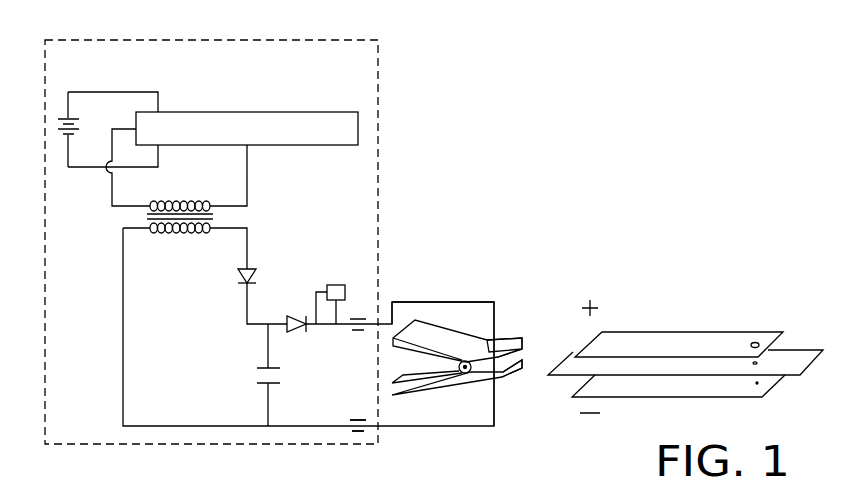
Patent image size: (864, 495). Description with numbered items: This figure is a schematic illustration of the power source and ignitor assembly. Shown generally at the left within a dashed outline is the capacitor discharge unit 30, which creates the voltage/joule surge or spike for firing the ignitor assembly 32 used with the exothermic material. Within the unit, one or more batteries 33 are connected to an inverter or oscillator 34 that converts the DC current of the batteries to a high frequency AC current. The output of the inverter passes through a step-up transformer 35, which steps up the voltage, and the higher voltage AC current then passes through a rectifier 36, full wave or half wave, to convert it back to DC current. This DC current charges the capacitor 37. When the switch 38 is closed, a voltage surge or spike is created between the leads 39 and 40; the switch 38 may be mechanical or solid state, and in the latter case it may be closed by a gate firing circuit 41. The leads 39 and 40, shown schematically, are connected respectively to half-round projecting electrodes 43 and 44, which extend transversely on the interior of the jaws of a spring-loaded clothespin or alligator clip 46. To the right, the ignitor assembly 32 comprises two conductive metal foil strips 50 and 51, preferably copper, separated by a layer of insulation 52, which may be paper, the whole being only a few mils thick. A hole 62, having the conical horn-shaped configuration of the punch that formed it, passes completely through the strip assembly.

The capacitor discharge unit 30 is at (391, 172).
The ignitor assembly 32 is at (700, 319).
The batteries 33 is at (68, 140).
The inverter or oscillator 34 is at (320, 112).
The step-up transformer 35 is at (180, 233).
The rectifier 36 is at (258, 273).
The capacitor 37 is at (263, 372).
The switch 38 is at (291, 331).
The lead 39 is at (409, 302).
The lead 40 is at (403, 427).
The gate firing circuit 41 is at (336, 285).
The projecting electrode 43 is at (494, 366).
The projecting electrode 44 is at (494, 378).
The alligator clip 46 is at (459, 319).
The conductive metal foil strip 50 is at (663, 334).
The conductive metal foil strip 51 is at (712, 393).
The layer of insulation 52 is at (797, 353).
The hole 62 is at (765, 327).